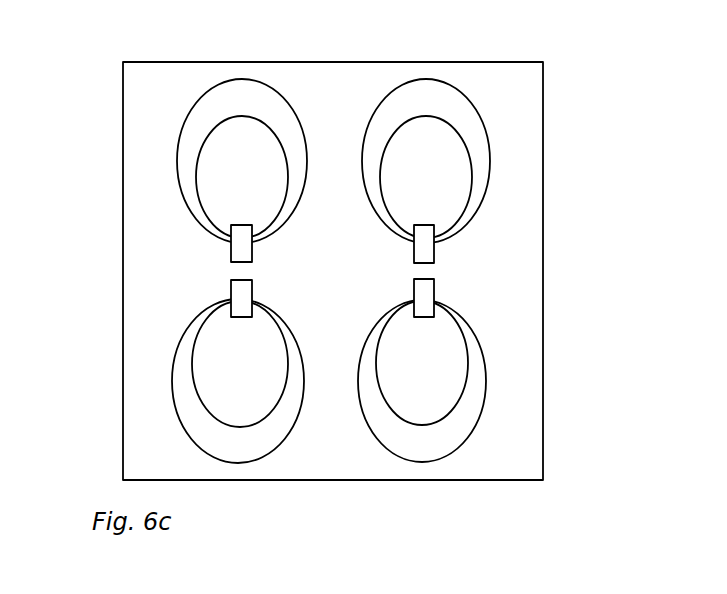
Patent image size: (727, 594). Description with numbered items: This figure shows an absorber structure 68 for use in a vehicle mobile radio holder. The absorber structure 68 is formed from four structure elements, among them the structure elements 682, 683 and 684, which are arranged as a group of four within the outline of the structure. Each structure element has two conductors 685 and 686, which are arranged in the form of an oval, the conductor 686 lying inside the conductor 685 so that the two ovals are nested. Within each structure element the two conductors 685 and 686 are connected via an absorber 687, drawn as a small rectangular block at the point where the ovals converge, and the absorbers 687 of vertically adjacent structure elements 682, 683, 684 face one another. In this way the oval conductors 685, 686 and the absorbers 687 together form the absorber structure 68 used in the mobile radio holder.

The base plate 68 is at (533, 204).
The structure element 682 is at (161, 376).
The structure element 683 is at (504, 146).
The structure element 684 is at (494, 377).
The conductor 685 is at (228, 78).
The conductor 686 is at (265, 115).
The absorber 687 is at (170, 163).